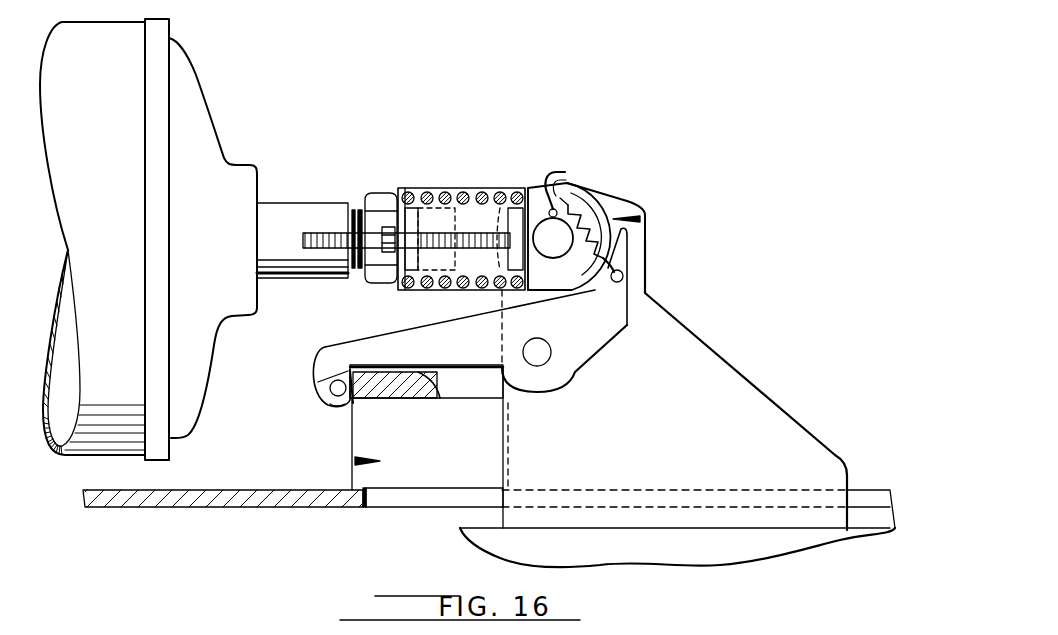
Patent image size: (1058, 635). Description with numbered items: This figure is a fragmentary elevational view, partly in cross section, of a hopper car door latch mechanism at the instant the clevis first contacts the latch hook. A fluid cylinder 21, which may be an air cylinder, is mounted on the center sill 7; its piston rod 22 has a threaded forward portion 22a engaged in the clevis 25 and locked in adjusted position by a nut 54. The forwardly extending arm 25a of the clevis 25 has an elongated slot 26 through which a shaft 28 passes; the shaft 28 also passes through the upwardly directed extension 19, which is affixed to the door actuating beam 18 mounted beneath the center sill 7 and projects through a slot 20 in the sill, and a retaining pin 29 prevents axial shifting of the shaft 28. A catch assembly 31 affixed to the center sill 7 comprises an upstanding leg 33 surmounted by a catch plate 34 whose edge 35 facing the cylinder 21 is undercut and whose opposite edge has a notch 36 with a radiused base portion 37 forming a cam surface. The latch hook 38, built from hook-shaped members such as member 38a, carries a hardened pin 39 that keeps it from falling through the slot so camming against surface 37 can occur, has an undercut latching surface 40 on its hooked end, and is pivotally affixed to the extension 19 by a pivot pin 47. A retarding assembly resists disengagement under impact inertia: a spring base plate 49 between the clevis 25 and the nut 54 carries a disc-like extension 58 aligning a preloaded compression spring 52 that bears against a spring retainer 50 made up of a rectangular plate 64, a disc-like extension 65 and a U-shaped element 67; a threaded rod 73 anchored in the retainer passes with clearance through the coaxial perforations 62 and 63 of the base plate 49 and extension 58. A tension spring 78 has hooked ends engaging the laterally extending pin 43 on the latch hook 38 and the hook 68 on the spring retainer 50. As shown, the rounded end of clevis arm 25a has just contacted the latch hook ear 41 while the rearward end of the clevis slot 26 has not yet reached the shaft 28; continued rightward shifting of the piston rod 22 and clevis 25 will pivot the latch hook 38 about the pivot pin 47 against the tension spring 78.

The center sill 7 is at (145, 500).
The door actuating beam 18 is at (603, 558).
The extension 19 is at (747, 390).
The slot 20 is at (378, 503).
The fluid cylinder 21 is at (112, 43).
The piston rod 22 is at (293, 213).
The threaded portion 22a is at (365, 193).
The clevis 25 is at (450, 190).
The clevis arm 25a is at (643, 212).
The elongated slot 26 is at (510, 188).
The shaft 28 is at (600, 197).
The retaining pin 29 is at (535, 207).
The catch assembly 31 is at (355, 461).
The leg 33 is at (357, 480).
The catch plate 34 is at (407, 398).
The undercut edge 35 is at (355, 398).
The notch 36 is at (482, 390).
The base portion 37 is at (438, 392).
The latch hook 38 is at (414, 348).
The hook-shaped member 38a is at (323, 353).
The hardened pin 39 is at (336, 402).
The latching surface 40 is at (318, 382).
The latch hook ear 41 is at (629, 243).
The laterally extending pin 43 is at (624, 276).
The pivot pin 47 is at (545, 368).
The spring base plate 49 is at (403, 188).
The spring retainer 50 is at (646, 218).
The spring 52 is at (482, 190).
The nut 54 is at (352, 268).
The disc-like extension 58 is at (417, 205).
The perforation 62 is at (390, 256).
The perforation 63 is at (420, 290).
The rectangular plate 64 is at (543, 291).
The disc-like extension 65 is at (502, 290).
The U-shaped element 67 is at (578, 272).
The hook 68 is at (563, 180).
The threaded rod 73 is at (303, 240).
The tension spring 78 is at (612, 252).